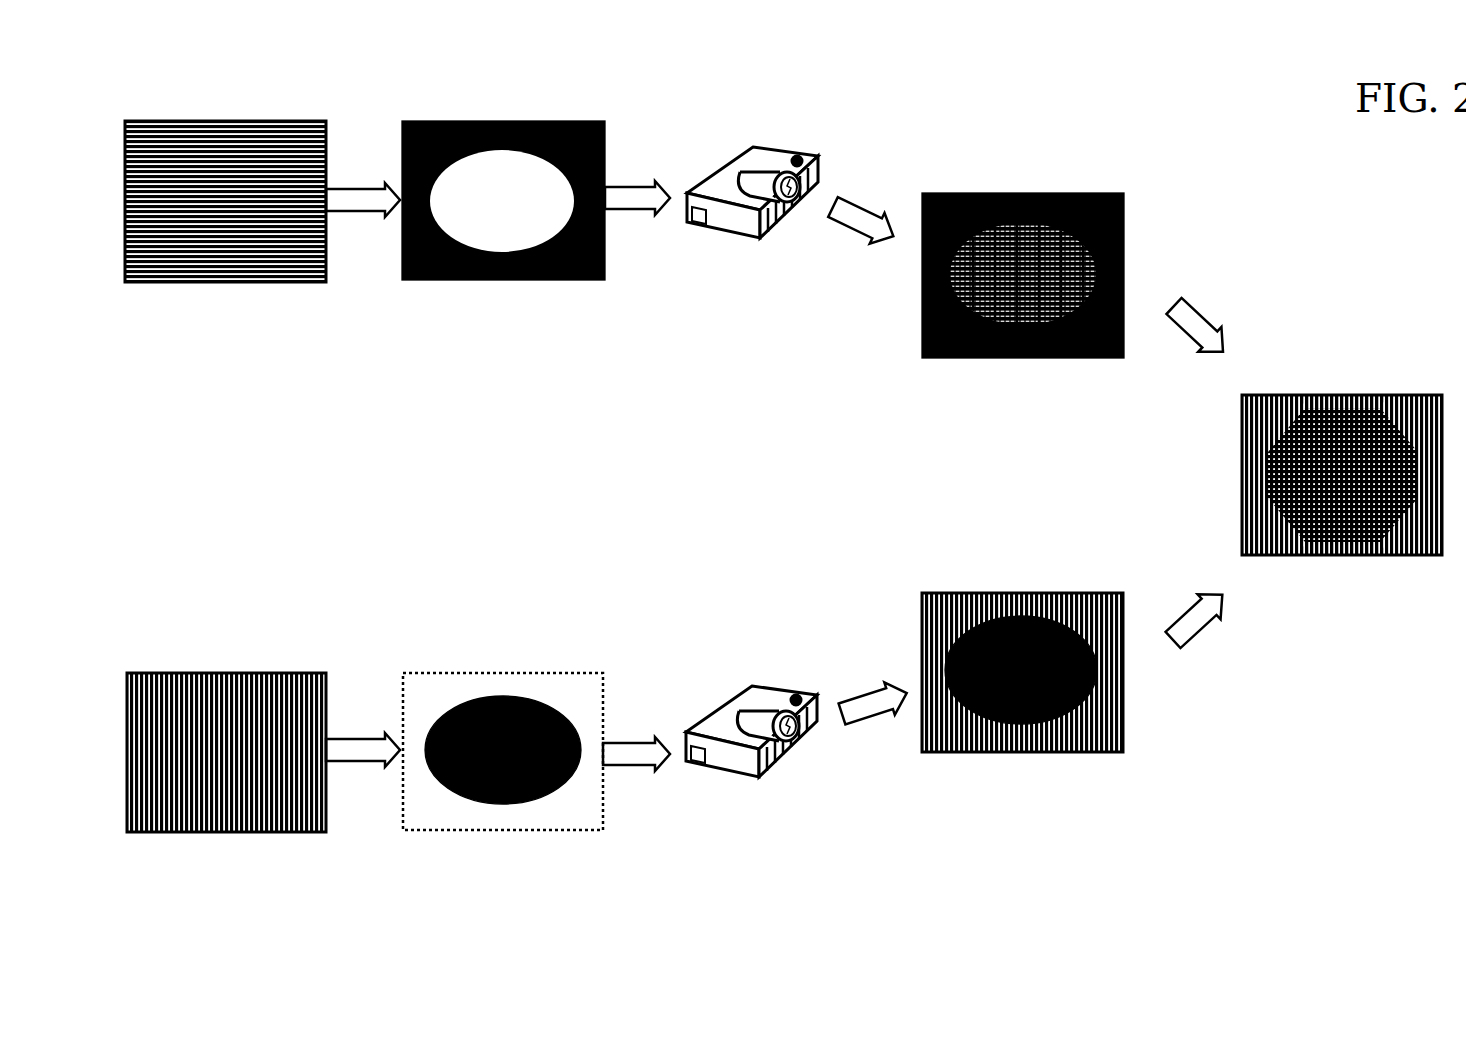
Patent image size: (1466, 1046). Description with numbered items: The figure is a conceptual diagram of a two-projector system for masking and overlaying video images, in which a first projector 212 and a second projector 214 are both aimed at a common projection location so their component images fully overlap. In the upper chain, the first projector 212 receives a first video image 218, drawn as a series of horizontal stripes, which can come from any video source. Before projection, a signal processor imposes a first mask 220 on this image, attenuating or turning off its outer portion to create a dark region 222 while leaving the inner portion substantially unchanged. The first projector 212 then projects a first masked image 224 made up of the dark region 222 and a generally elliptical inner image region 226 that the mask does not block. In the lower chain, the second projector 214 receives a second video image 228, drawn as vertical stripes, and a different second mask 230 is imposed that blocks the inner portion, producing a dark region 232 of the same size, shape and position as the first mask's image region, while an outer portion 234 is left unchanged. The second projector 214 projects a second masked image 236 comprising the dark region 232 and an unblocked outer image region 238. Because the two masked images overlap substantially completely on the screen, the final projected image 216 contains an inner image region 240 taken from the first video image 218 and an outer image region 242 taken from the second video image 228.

The first projector 212 is at (733, 225).
The second projector 214 is at (745, 697).
The final projected image 216 is at (1398, 575).
The first video image 218 is at (225, 253).
The first mask 220 is at (469, 296).
The dark region 222 is at (577, 121).
The first masked image 224 is at (1093, 180).
The inner image region 226 is at (1020, 286).
The second video image 228 is at (244, 688).
The second mask 230 is at (573, 660).
The dark region 232 is at (490, 697).
The outer portion 234 is at (431, 700).
The second masked image 236 is at (1099, 770).
The outer image region 238 is at (955, 608).
The inner image region 240 is at (1340, 465).
The outer image region 242 is at (1265, 430).